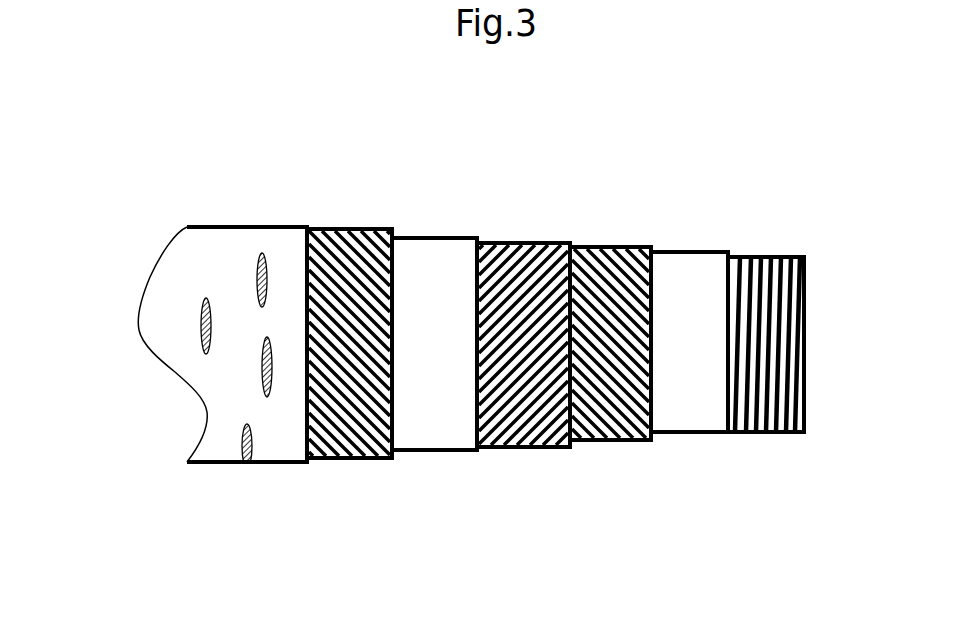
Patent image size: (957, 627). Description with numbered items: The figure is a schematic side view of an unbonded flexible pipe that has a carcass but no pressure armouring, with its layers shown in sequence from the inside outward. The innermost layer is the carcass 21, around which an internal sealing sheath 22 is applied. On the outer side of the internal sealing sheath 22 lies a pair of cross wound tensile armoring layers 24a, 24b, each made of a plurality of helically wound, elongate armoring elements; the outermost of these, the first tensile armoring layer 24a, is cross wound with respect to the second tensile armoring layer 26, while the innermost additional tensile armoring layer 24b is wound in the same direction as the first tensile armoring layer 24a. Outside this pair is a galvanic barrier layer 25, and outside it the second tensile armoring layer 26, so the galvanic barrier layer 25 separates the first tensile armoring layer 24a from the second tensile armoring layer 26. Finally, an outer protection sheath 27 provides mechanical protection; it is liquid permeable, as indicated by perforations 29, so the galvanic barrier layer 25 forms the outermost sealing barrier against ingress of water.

The carcass 21 is at (783, 432).
The internal sealing sheath 22 is at (712, 312).
The first tensile armoring layer 24a is at (533, 447).
The additional tensile armoring layer 24b is at (613, 436).
The galvanic barrier layer 25 is at (430, 254).
The second tensile armoring layer 26 is at (340, 240).
The outer protection sheath 27 is at (232, 238).
The perforations 29 is at (255, 378).